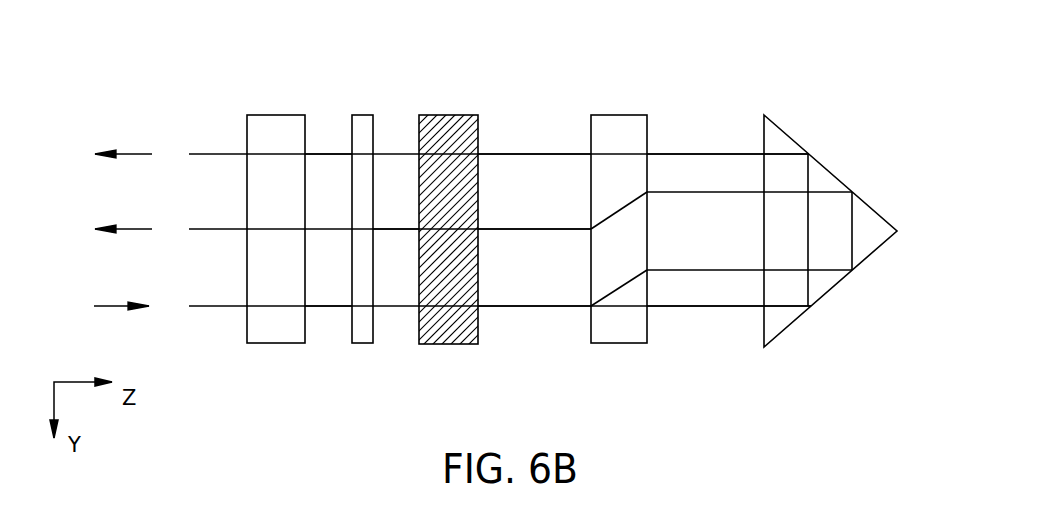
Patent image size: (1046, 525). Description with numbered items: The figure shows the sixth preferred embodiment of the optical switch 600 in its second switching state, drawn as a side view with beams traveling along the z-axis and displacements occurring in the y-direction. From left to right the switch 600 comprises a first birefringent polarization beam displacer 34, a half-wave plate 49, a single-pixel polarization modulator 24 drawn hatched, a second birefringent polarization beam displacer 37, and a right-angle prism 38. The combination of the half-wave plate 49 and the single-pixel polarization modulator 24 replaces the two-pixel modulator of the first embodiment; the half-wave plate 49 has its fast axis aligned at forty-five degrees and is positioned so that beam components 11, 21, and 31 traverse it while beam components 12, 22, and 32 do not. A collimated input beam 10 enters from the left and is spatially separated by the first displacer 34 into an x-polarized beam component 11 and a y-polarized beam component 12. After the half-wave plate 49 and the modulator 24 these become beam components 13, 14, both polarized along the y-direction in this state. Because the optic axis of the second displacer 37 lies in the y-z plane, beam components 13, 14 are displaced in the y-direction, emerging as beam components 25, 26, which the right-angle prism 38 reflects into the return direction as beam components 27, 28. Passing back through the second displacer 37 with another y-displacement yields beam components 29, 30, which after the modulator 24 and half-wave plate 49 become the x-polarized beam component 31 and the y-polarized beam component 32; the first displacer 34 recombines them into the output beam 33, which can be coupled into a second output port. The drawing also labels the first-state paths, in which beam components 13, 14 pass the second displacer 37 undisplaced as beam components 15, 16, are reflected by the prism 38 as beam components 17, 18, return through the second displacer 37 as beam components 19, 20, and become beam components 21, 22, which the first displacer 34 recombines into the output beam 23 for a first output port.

The optical switch 600 is at (214, 44).
The first birefringent polarization beam displacer 34 is at (277, 115).
The half-wave plate 49 is at (365, 115).
The polarization modulator 24 is at (450, 115).
The second birefringent polarization beam displacer 37 is at (622, 115).
The right-angle prism 38 is at (832, 174).
The output beam 23 is at (426, 155).
The output beam 33 is at (317, 230).
The collimated input beam 10 is at (427, 307).
The beam component 11 is at (344, 351).
The beam component 12 is at (332, 307).
The beam component 13 is at (534, 352).
The beam component 14 is at (537, 307).
The beam component 15 is at (729, 352).
The beam component 16 is at (712, 307).
The beam component 17 is at (728, 199).
The beam component 18 is at (692, 153).
The beam component 19 is at (534, 122).
The beam component 20 is at (525, 153).
The beam component 21 is at (330, 112).
The beam component 22 is at (328, 152).
The beam component 25 is at (721, 269).
The beam component 26 is at (662, 269).
The beam component 27 is at (721, 215).
The beam component 28 is at (665, 191).
The beam component 29 is at (534, 198).
The beam component 30 is at (525, 229).
The beam component 31 is at (408, 153).
The beam component 32 is at (397, 229).